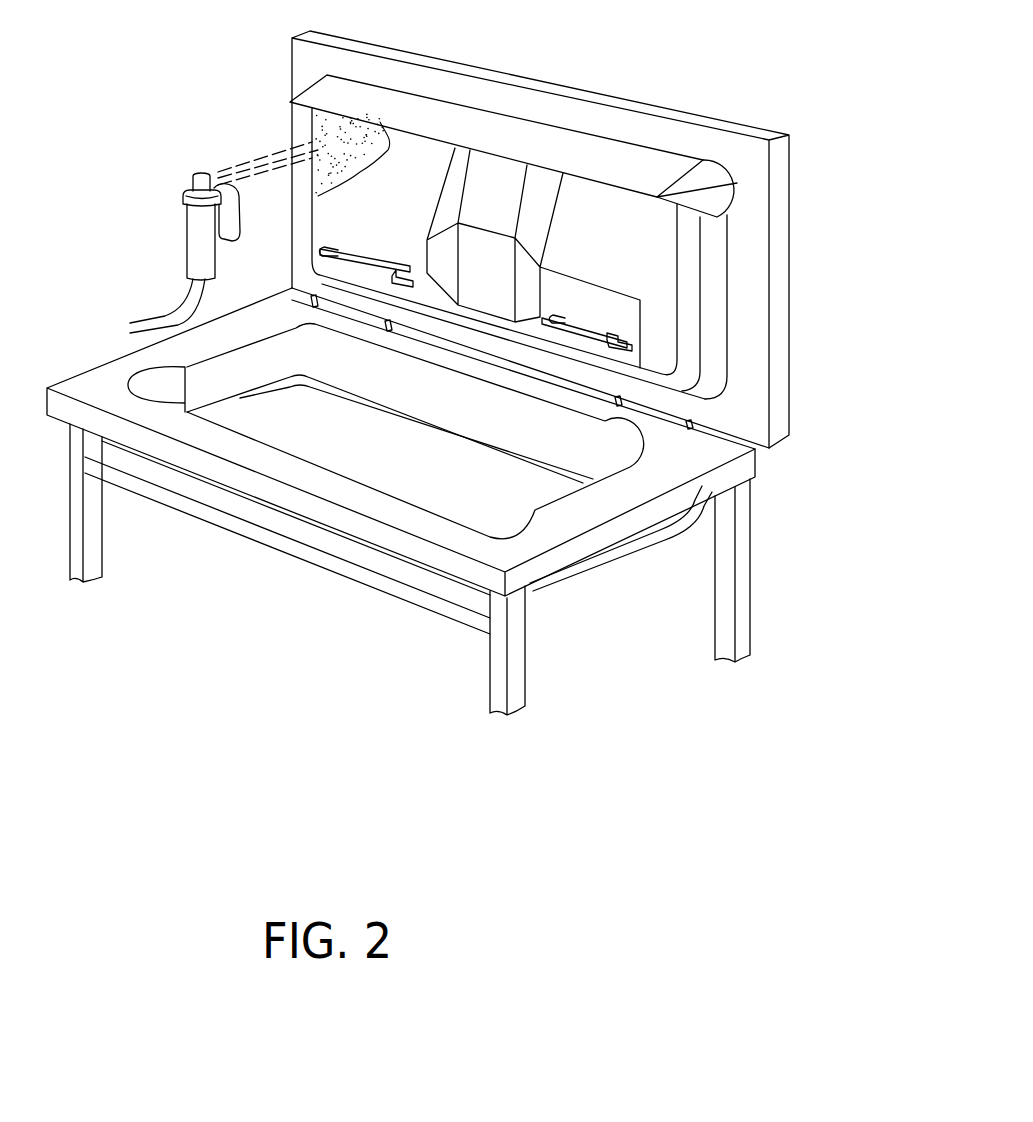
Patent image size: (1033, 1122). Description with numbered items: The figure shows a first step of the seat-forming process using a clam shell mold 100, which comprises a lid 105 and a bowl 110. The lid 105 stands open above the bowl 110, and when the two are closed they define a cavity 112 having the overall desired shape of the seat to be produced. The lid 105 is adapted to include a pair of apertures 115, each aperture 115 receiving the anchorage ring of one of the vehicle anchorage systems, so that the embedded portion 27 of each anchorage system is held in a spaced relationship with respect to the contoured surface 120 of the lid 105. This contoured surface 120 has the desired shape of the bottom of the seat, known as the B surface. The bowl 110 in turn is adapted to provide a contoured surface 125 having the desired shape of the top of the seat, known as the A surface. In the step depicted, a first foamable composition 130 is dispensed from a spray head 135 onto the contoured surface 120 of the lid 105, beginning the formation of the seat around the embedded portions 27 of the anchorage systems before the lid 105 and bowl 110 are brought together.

The clam shell mold 100 is at (822, 356).
The lid 105 is at (744, 147).
The bowl 110 is at (528, 548).
The cavity 112 is at (413, 462).
The aperture 115 is at (377, 263).
The contoured surface 120 is at (613, 217).
The contoured surface 125 is at (263, 432).
The first foamable composition 130 is at (272, 160).
The spray head 135 is at (197, 237).
The embedded portion 27 is at (330, 247).